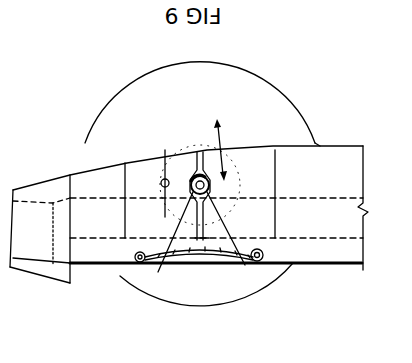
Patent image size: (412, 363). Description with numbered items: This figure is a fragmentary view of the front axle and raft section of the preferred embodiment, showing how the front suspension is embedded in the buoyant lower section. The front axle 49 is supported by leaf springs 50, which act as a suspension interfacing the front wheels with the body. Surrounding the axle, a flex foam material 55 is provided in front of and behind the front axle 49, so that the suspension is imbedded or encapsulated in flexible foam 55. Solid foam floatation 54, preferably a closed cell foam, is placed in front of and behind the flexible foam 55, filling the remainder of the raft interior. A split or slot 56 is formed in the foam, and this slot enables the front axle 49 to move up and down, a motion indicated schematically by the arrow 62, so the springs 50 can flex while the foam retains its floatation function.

The front axle 49 is at (188, 168).
The leaf springs 50 is at (243, 272).
The solid foam floatation 54 is at (96, 178).
The flexible foam floatation 55 is at (264, 150).
The split or slot 56 is at (191, 230).
The arrow 62 is at (230, 130).